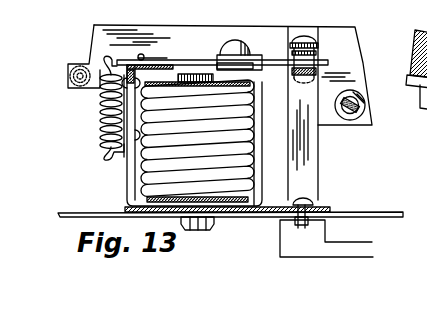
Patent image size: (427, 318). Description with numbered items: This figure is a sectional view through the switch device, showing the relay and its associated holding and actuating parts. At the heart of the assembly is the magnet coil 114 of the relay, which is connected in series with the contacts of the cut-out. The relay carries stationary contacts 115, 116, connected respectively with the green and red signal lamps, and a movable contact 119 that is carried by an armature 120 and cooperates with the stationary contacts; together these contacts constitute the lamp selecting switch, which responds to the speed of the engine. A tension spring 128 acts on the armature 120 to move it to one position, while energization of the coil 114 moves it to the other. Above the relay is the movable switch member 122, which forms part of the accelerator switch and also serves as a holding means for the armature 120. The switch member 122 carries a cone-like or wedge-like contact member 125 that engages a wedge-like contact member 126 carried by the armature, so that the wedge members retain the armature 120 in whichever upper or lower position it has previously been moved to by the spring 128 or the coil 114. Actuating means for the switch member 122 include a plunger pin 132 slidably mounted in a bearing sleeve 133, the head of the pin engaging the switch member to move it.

The magnet coil 114 is at (155, 180).
The stationary contact 115 is at (316, 71).
The stationary contact 116 is at (296, 47).
The movable contact 119 is at (313, 55).
The armature 120 is at (205, 59).
The movable switch member 122 is at (163, 33).
The wedge-like contact member 125 is at (240, 38).
The wedge-like contact member 126 is at (222, 50).
The tension spring 128 is at (126, 123).
The plunger pin 132 is at (365, 104).
The bearing sleeve 133 is at (343, 116).